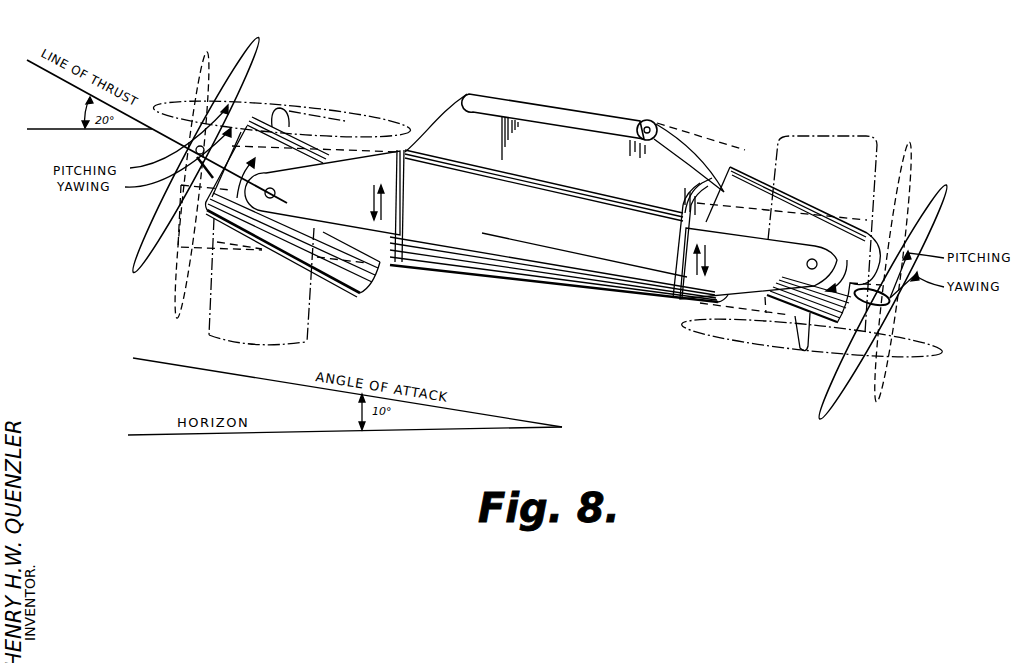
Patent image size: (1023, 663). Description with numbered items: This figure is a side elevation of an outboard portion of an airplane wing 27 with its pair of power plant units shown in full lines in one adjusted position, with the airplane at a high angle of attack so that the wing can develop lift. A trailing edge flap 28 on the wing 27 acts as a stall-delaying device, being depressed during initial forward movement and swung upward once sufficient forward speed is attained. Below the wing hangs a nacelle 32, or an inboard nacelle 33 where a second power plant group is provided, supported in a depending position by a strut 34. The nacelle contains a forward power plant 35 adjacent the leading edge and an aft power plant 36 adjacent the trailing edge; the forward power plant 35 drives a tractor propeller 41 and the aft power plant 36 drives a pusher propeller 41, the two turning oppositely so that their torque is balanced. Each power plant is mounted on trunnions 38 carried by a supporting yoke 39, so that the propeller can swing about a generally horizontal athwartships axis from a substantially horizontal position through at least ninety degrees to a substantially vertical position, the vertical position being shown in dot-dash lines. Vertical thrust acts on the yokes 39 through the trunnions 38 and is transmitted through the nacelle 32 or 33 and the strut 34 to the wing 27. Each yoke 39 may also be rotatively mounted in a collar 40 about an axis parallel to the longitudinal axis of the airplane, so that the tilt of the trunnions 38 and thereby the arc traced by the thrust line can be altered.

The wing 27 is at (575, 125).
The flap 28 is at (673, 152).
The nacelle 32 is at (544, 284).
The inboard nacelle 33 is at (543, 230).
The strut 34 is at (561, 165).
The forward power plant 35 is at (367, 284).
The aft power plant 36 is at (754, 230).
The trunnions 38 is at (276, 192).
The supporting yoke 39 is at (351, 211).
The collar 40 is at (405, 199).
The propeller 41 is at (248, 62).